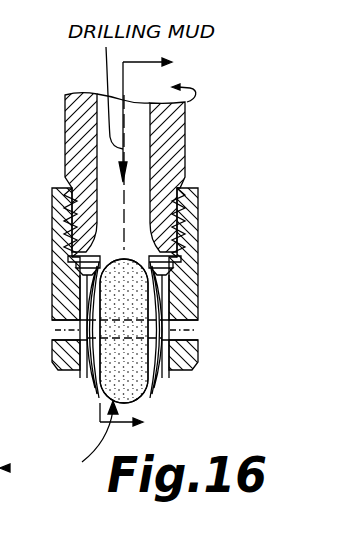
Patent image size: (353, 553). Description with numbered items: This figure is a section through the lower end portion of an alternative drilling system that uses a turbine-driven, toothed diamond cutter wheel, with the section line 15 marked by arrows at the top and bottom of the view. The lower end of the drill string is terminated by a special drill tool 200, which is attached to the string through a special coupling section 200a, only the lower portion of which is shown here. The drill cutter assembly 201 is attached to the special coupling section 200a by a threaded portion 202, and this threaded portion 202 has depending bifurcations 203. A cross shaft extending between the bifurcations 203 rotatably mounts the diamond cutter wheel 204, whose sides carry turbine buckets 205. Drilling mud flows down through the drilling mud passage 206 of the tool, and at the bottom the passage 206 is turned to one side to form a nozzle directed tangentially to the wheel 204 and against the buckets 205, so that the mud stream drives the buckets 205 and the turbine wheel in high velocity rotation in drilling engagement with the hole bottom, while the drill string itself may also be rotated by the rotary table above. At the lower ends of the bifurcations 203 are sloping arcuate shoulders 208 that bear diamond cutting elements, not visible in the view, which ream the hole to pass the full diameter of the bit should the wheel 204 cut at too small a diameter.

The section line 15- 15 is at (154, 241).
The special drill tool 200 is at (220, 92).
The special coupling section 200a is at (182, 175).
The drill cutter assembly 201 is at (70, 448).
The threaded portion 202 is at (200, 200).
The depending bifurcations 203 is at (198, 283).
The diamond cutter wheel 204 is at (100, 403).
The turbine buckets 205 is at (92, 375).
The drilling mud passage 206 is at (145, 125).
The sloping arcuate shoulders 208 is at (197, 363).